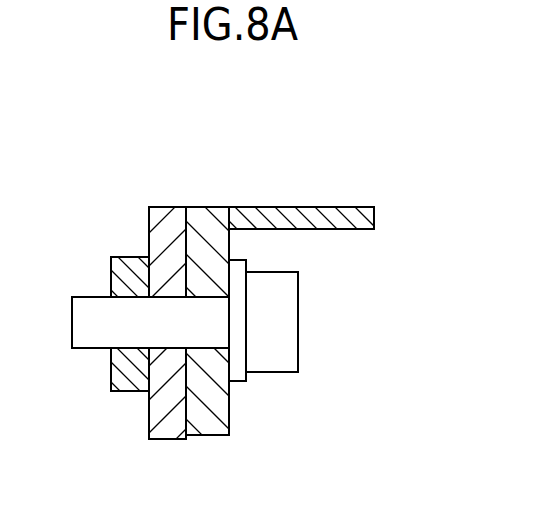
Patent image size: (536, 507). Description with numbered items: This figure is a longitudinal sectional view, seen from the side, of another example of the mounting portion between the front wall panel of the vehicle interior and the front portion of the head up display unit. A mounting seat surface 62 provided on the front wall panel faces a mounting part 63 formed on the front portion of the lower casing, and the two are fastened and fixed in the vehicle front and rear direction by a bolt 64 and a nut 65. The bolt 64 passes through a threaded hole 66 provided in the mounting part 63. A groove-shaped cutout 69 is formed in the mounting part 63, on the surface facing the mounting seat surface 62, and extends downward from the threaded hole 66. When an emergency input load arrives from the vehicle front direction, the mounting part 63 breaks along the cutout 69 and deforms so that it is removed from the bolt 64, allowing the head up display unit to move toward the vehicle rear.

The mounting seat surface 62 is at (168, 207).
The mounting part 63 is at (330, 207).
The bolt 64 is at (298, 342).
The nut 65 is at (125, 392).
The threaded hole 66 is at (228, 308).
The groove-shaped cutout 69 is at (230, 412).